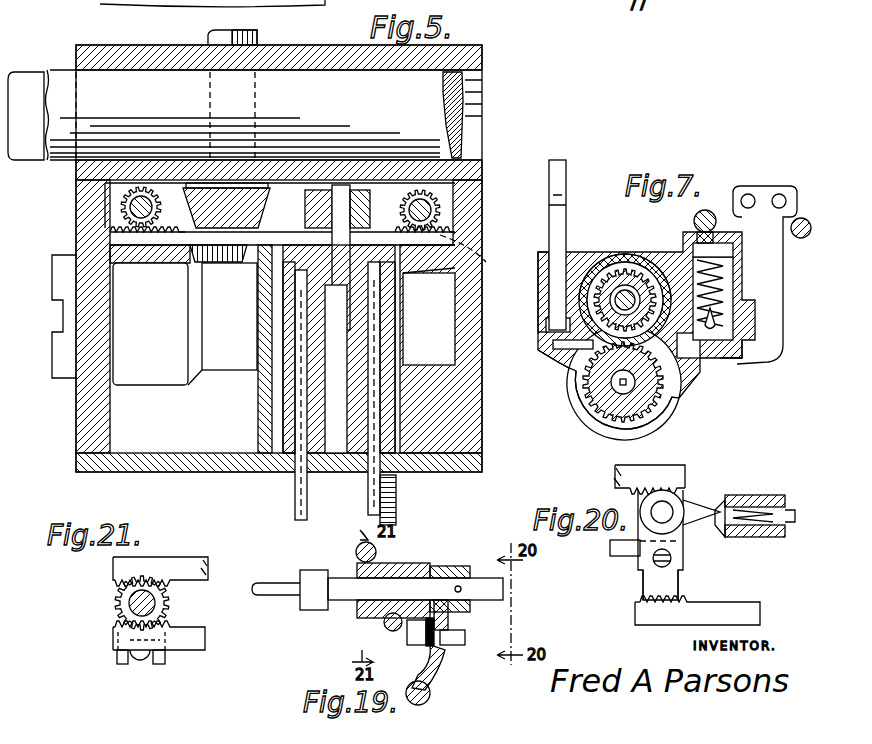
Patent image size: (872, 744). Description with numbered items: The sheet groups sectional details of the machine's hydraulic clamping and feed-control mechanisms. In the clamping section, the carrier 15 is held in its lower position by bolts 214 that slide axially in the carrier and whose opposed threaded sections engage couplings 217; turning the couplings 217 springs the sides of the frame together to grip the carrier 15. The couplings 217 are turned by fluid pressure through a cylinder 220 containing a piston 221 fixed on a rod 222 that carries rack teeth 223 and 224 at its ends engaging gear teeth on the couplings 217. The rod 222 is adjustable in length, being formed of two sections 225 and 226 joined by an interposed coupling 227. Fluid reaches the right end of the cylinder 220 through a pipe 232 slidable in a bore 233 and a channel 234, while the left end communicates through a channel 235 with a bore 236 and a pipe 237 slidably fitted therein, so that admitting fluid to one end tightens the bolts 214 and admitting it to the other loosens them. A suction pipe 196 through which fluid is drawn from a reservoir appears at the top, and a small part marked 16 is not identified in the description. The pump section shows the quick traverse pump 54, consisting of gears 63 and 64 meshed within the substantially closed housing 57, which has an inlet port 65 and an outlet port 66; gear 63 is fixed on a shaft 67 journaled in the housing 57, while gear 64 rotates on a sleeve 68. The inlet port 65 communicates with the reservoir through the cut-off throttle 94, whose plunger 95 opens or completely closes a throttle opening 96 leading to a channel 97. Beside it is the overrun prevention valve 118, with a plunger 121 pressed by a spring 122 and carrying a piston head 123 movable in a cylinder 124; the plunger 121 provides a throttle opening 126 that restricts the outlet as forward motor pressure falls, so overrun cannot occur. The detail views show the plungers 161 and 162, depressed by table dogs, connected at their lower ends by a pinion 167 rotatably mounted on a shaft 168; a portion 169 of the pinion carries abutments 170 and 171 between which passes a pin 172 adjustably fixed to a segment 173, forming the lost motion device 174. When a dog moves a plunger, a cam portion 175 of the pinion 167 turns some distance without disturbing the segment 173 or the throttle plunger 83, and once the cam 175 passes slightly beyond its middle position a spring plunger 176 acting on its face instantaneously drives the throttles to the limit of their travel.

In FIG. 5, the carrier 15 is at (76, 178).
In FIG. 5, the bracket 16 is at (52, 296).
In FIG. 5, the suction pipe 196 is at (256, 0).
In FIG. 5, the bolts 214 is at (128, 205).
In FIG. 5, the couplings 217 is at (118, 208).
In FIG. 5, the section 225 is at (105, 238).
In FIG. 5, the rod 222 is at (268, 215).
In FIG. 5, the coupling 227 is at (218, 268).
In FIG. 5, the piston 221 is at (338, 210).
In FIG. 5, the cylinder 220 is at (362, 212).
In FIG. 5, the rack teeth 223 is at (157, 324).
In FIG. 5, the channel 235 is at (258, 310).
In FIG. 5, the bore 236 is at (300, 322).
In FIG. 5, the pipe 237 is at (295, 500).
In FIG. 5, the pipe 232 is at (368, 500).
In FIG. 5, the bore 233 is at (385, 310).
In FIG. 5, the channel 234 is at (398, 292).
In FIG. 5, the rack teeth 224 is at (459, 254).
In FIG. 5, the section 226 is at (458, 270).
In FIG. 7, the cut-off throttle 94 is at (545, 249).
In FIG. 7, the plunger 95 is at (553, 166).
In FIG. 7, the throttle opening 96 is at (555, 344).
In FIG. 7, the channel 97 is at (548, 325).
In FIG. 7, the quick traverse pump 54 is at (641, 243).
In FIG. 7, the gear 64 is at (606, 270).
In FIG. 7, the sleeve 68 is at (657, 262).
In FIG. 7, the inlet port 65 is at (562, 361).
In FIG. 7, the outlet port 66 is at (672, 347).
In FIG. 7, the shaft 67 is at (585, 398).
In FIG. 7, the gear 63 is at (598, 428).
In FIG. 7, the housing 57 is at (676, 412).
In FIG. 7, the overrun prevention valve 118 is at (748, 340).
In FIG. 7, the plunger 121 is at (736, 358).
In FIG. 7, the spring 122 is at (725, 268).
In FIG. 7, the piston head 123 is at (735, 248).
In FIG. 7, the cylinder 124 is at (722, 230).
In FIG. 7, the throttle opening 126 is at (718, 323).
In FIG. 20, the plunger 161 is at (662, 466).
In FIG. 19, the plunger 161 is at (366, 540).
In FIG. 21, the plunger 161 is at (181, 567).
In FIG. 20, the plunger 162 is at (606, 552).
In FIG. 19, the plunger 162 is at (386, 625).
In FIG. 21, the plunger 162 is at (202, 643).
In FIG. 19, the pinion 167 is at (380, 568).
In FIG. 21, the pinion 167 is at (117, 603).
In FIG. 19, the shaft 168 is at (418, 585).
In FIG. 19, the portion 169 is at (420, 628).
In FIG. 21, the abutment 170 is at (117, 660).
In FIG. 21, the abutment 171 is at (157, 664).
In FIG. 19, the pin 172 is at (458, 633).
In FIG. 20, the segment 173 is at (670, 587).
In FIG. 19, the segment 173 is at (440, 665).
In FIG. 20, the lost motion device 174 is at (632, 578).
In FIG. 20, the cam portion 175 is at (695, 505).
In FIG. 20, the spring plunger 176 is at (722, 534).
In FIG. 20, the throttle plunger 83 is at (745, 610).
In FIG. 19, the throttle plunger 83 is at (418, 705).